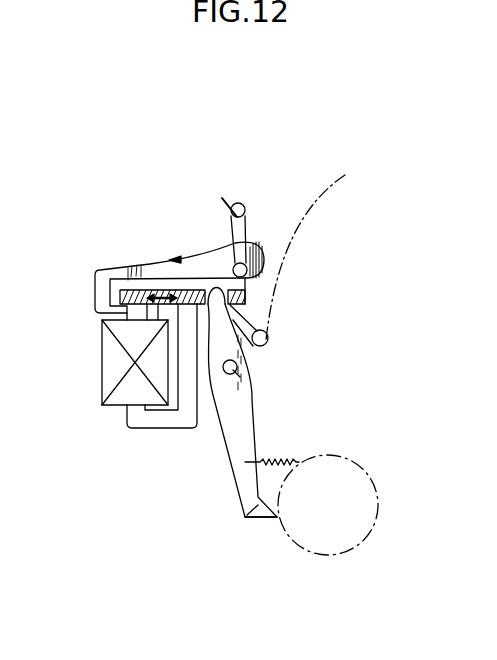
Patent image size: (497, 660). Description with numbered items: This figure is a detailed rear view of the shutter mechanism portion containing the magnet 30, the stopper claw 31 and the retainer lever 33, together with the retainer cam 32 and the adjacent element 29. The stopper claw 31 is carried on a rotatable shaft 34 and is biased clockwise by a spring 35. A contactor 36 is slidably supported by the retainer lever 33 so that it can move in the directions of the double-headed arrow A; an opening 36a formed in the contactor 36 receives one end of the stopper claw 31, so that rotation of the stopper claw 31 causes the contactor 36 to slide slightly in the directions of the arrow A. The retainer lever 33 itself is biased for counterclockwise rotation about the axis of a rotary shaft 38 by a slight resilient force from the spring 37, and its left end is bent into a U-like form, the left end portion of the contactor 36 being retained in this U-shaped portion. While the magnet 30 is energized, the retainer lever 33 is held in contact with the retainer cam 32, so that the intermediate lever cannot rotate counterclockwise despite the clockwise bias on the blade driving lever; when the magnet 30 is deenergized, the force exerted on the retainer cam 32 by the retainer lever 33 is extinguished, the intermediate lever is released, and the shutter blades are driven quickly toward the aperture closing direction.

The tire 29 is at (320, 557).
The magnet 30 is at (143, 428).
The stopper claw 31 is at (243, 520).
The retainer cam 32 is at (307, 212).
The retainer lever 33 is at (217, 251).
The rotatable shaft 34 is at (216, 422).
The spring 35 is at (280, 456).
The contactor 36 is at (130, 290).
The opening 36a is at (182, 284).
The spring 37 is at (225, 208).
The rotary shaft 38 is at (236, 246).